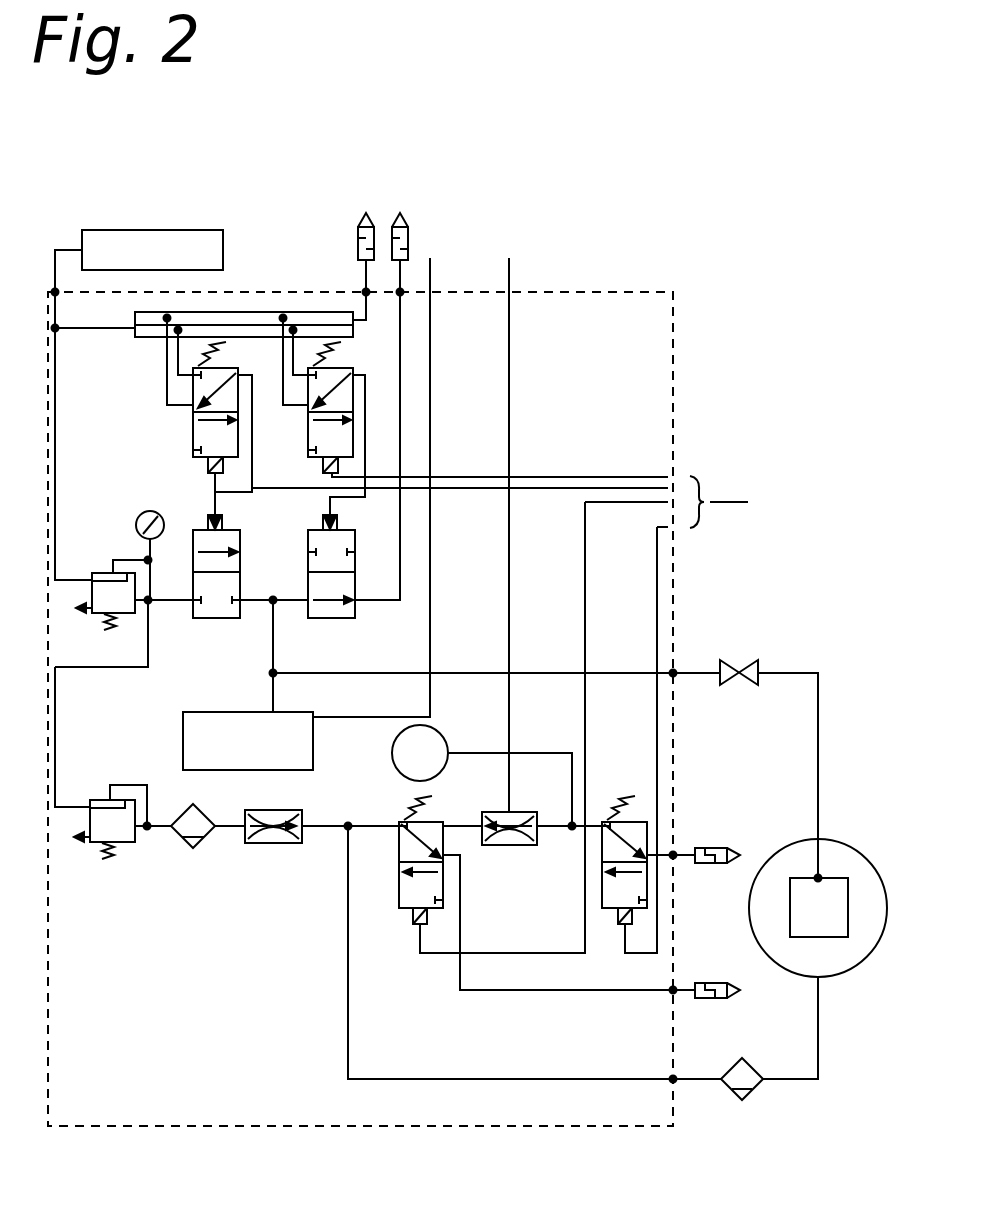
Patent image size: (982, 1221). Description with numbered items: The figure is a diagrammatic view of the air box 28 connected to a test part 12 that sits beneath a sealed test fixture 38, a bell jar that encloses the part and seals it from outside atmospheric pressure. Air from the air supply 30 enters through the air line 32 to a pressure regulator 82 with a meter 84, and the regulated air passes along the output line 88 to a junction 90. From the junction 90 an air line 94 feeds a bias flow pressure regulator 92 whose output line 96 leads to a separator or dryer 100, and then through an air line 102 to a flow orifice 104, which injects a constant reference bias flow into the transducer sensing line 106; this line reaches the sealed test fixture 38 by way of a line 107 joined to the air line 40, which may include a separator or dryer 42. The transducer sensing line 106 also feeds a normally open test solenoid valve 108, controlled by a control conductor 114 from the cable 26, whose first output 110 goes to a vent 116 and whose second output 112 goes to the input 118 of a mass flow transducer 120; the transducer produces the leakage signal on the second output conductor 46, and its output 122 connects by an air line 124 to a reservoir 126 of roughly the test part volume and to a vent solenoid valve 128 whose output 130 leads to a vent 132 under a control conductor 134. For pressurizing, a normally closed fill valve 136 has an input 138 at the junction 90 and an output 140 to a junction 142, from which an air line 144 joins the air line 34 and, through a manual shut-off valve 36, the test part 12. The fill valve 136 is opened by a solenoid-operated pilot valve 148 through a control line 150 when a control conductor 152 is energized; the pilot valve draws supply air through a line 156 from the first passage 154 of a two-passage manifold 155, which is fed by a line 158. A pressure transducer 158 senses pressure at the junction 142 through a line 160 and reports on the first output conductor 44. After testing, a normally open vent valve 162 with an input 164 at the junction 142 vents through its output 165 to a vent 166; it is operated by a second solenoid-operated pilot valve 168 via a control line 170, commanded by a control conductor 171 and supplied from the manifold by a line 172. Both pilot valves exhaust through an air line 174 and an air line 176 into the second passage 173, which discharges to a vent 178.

The test part 12 is at (838, 878).
The cable 26 is at (718, 501).
The air box 28 is at (230, 1128).
The air supply 30 is at (128, 228).
The air line 32 is at (60, 248).
The air line 34 is at (686, 670).
The manual shut-off valve 36 is at (742, 660).
The sealed test fixture 38 is at (850, 975).
The air line 40 is at (805, 1082).
The separator or dryer 42 is at (752, 1096).
The first output conductor 44 is at (431, 274).
The second output conductor 46 is at (509, 274).
The pressure regulator 82 is at (96, 572).
The meter 84 is at (136, 512).
The output line 88 is at (153, 578).
The junction 90 is at (150, 640).
The bias flow pressure regulator 92 is at (100, 855).
The air line 94 is at (58, 700).
The output line 96 is at (147, 784).
The separator or dryer 100 is at (200, 843).
The air line 102 is at (214, 812).
The flow orifice 104 is at (280, 808).
The transducer sensing line 106 is at (334, 828).
The line 107 is at (440, 1078).
The test solenoid valve 108 is at (402, 818).
The first output 110 is at (462, 940).
The second output 112 is at (455, 826).
The control conductor 114 is at (583, 728).
The vent 116 is at (712, 982).
The input 118 is at (493, 845).
The mass flow transducer 120 is at (510, 846).
The output 122 is at (516, 810).
The air line 124 is at (544, 830).
The reservoir 126 is at (441, 733).
The vent solenoid valve 128 is at (618, 925).
The output 130 is at (662, 830).
The vent 132 is at (718, 848).
The control conductor 134 is at (656, 748).
The fill valve 136 is at (208, 520).
The input 138 is at (192, 608).
The output 140 is at (246, 575).
The junction 142 is at (272, 608).
The air line 144 is at (290, 672).
The solenoid-operated pilot valve 148 is at (193, 440).
The control line 150 is at (254, 462).
The control conductor 152 is at (449, 490).
The first passage 154 is at (136, 340).
The two-passage manifold 155 is at (296, 300).
The line 156 is at (167, 375).
The line 158 is at (77, 330).
The line 160 is at (272, 695).
The vent valve 162 is at (353, 552).
The input 164 is at (308, 592).
The output 165 is at (366, 605).
The vent 166 is at (400, 212).
The solenoid-operated pilot valve 168 is at (352, 374).
The control line 170 is at (365, 406).
The control conductor 171 is at (449, 476).
The line 172 is at (300, 330).
The second passage 173 is at (314, 318).
The air line 174 is at (180, 328).
The air line 176 is at (231, 354).
The vent 178 is at (360, 212).